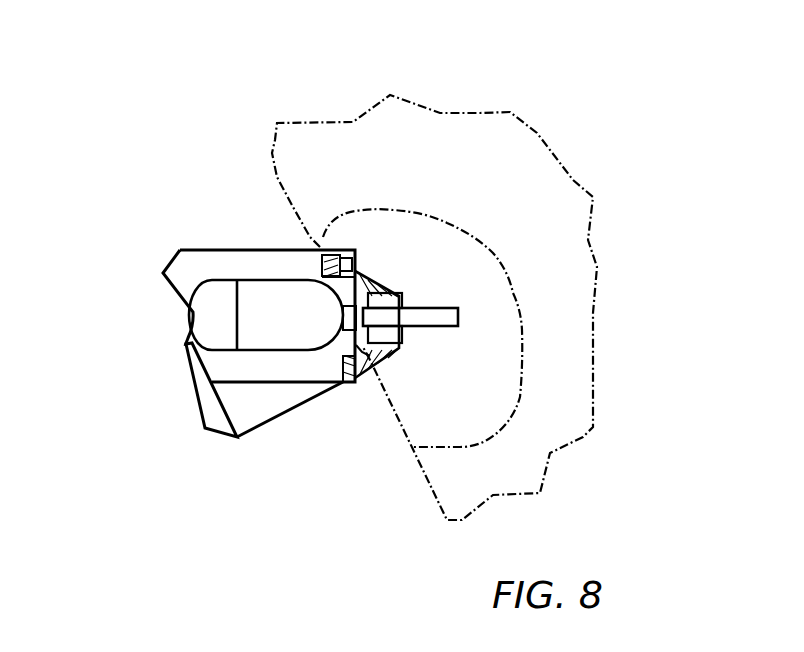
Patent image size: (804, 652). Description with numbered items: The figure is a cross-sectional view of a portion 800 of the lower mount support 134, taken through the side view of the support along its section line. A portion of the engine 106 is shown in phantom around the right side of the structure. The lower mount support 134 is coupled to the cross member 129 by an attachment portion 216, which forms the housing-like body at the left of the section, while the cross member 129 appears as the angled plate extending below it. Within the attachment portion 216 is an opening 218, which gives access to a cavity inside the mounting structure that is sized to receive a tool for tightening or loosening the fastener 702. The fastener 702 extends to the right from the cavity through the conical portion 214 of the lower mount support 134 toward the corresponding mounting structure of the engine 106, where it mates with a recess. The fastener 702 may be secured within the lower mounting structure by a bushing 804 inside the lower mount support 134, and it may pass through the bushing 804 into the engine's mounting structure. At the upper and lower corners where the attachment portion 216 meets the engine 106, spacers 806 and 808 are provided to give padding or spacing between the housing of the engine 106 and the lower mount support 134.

The portion of the lower mount support 800 is at (194, 60).
The lower mount support 134 is at (233, 180).
The attachment portion 216 is at (228, 250).
The opening 218 is at (300, 326).
The cross member 129 is at (215, 408).
The spacer 808 is at (343, 386).
The spacer 806 is at (332, 257).
The bushing 804 is at (403, 300).
The fastener 702 is at (447, 313).
The conical portion 214 is at (370, 352).
The engine 106 is at (512, 110).